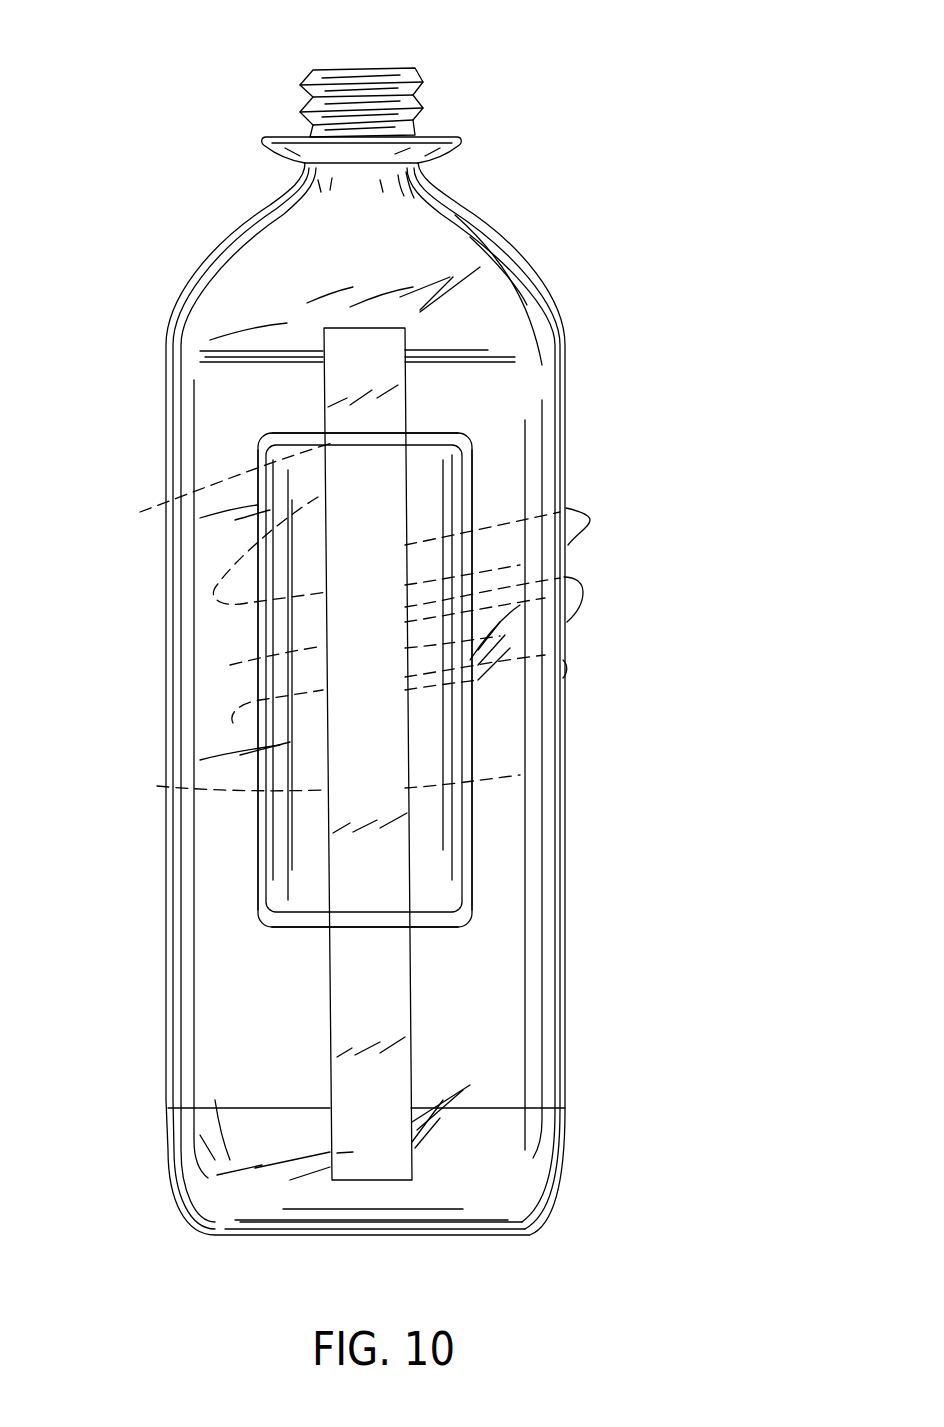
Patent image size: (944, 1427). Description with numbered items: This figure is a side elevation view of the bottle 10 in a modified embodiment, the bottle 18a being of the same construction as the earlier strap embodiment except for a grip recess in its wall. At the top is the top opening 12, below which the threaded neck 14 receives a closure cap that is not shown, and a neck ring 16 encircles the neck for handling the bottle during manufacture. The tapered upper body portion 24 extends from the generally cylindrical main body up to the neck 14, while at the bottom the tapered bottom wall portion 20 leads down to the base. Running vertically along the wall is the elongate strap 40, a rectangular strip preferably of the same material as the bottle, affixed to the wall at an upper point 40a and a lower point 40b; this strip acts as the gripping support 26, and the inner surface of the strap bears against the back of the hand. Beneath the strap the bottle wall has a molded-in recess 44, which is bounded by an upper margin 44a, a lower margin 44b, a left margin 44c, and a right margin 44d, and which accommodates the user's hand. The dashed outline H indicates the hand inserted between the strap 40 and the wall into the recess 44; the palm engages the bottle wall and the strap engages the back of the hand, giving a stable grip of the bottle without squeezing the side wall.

The container 10 is at (670, 322).
The top opening 12 is at (410, 67).
The threaded neck 14 is at (420, 110).
The neck ring 16 is at (460, 141).
The bottle 18a is at (697, 530).
The tapered bottom wall portion 20 is at (563, 1162).
The tapered upper body portion 24 is at (537, 274).
The gripping support 26 is at (385, 777).
The strap 40 is at (265, 632).
The upper point 40a is at (337, 368).
The lower point 40b is at (350, 1152).
The molded-in recess 44 is at (462, 710).
The upper margin 44a is at (440, 433).
The lower margin 44b is at (443, 923).
The left margin 44c is at (262, 688).
The right margin 44d is at (478, 630).
The hand outline H is at (590, 518).